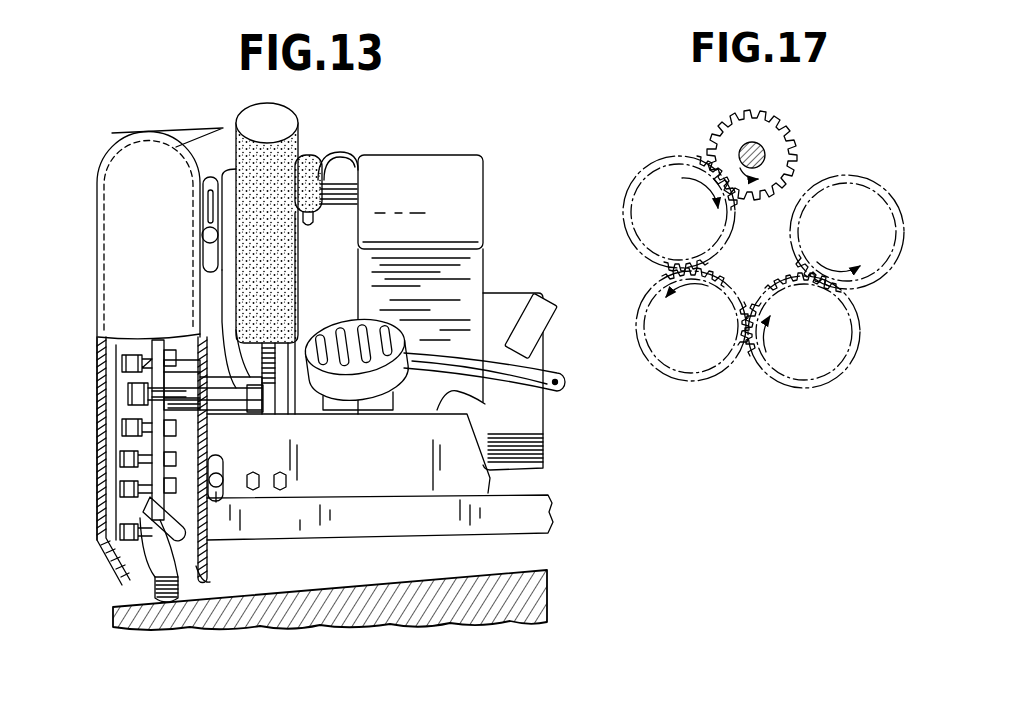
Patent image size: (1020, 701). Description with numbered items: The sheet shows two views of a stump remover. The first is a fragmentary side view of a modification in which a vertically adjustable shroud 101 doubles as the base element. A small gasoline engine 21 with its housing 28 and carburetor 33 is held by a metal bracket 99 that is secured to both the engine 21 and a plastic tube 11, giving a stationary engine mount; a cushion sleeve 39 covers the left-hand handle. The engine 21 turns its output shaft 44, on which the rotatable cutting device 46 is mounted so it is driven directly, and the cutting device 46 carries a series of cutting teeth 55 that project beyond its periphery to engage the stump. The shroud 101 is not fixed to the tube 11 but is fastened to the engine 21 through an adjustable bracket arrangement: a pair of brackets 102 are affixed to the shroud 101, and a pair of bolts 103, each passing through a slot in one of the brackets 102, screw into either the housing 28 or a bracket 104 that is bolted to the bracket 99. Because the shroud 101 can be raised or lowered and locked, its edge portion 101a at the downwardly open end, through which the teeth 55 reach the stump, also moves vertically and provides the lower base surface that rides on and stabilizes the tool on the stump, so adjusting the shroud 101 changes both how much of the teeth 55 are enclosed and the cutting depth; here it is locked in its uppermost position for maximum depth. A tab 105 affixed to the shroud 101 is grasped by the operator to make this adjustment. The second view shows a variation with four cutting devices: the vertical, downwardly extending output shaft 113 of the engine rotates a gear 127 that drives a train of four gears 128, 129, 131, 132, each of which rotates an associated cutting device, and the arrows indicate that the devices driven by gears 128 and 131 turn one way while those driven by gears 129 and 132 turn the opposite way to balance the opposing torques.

In FIG. 13, the tube 11 is at (527, 510).
In FIG. 13, the engine 21 is at (366, 150).
In FIG. 13, the housing 28 is at (480, 160).
In FIG. 13, the carburetor 33 is at (393, 342).
In FIG. 13, the cushion sleeve 39 is at (300, 140).
In FIG. 13, the output shaft 44 is at (228, 383).
In FIG. 13, the cutting device 46 is at (120, 410).
In FIG. 13, the cutting teeth 55 is at (163, 587).
In FIG. 13, the metal bracket 99 is at (485, 400).
In FIG. 13, the shroud 101 is at (97, 175).
In FIG. 13, the edge portion 101a is at (210, 572).
In FIG. 13, the brackets 102 is at (203, 181).
In FIG. 13, the bolts 103 is at (205, 232).
In FIG. 13, the bracket 104 is at (236, 486).
In FIG. 13, the tab 105 is at (192, 133).
In FIG. 17, the output shaft 113 is at (766, 152).
In FIG. 17, the gear 127 is at (765, 116).
In FIG. 17, the gear 128 is at (680, 162).
In FIG. 17, the gear 129 is at (680, 377).
In FIG. 17, the gear 131 is at (806, 377).
In FIG. 17, the gear 132 is at (880, 262).